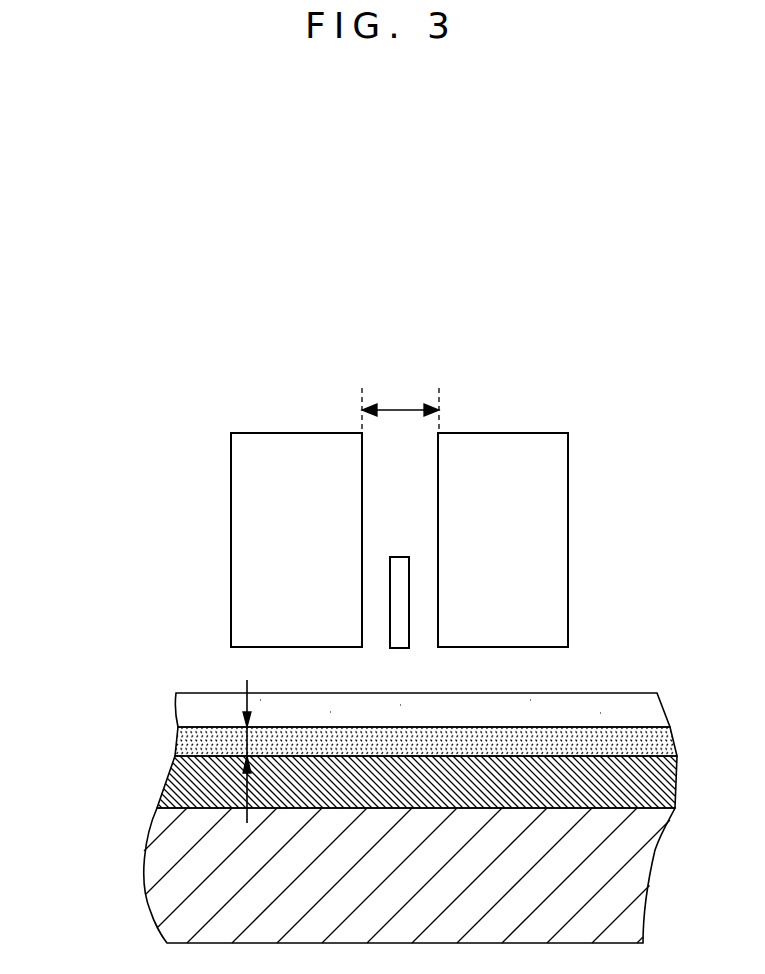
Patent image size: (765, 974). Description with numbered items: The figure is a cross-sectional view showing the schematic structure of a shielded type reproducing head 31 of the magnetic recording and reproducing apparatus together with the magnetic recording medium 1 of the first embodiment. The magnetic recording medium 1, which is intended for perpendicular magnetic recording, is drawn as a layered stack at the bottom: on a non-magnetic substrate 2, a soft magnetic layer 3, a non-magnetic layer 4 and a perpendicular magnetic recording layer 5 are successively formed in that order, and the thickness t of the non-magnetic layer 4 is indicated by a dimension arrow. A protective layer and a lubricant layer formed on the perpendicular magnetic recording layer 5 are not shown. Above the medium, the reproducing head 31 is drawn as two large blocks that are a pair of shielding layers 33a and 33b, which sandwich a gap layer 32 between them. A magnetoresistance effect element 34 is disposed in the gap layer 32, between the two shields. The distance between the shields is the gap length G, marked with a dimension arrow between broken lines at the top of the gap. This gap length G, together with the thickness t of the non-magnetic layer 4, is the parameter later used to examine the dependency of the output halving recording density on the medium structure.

The magnetic recording medium 1 is at (86, 690).
The non-magnetic substrate 2 is at (192, 890).
The soft magnetic layer 3 is at (193, 778).
The non-magnetic layer 4 is at (192, 740).
The perpendicular magnetic recording layer 5 is at (195, 708).
The reproducing head 31 is at (575, 370).
The gap layer 32 is at (387, 492).
The shielding layer 33a is at (250, 488).
The shielding layer 33b is at (545, 505).
The magnetoresistance effect element 34 is at (400, 602).
The gap length G is at (400, 405).
The thickness of the non-magnetic layer t is at (225, 726).